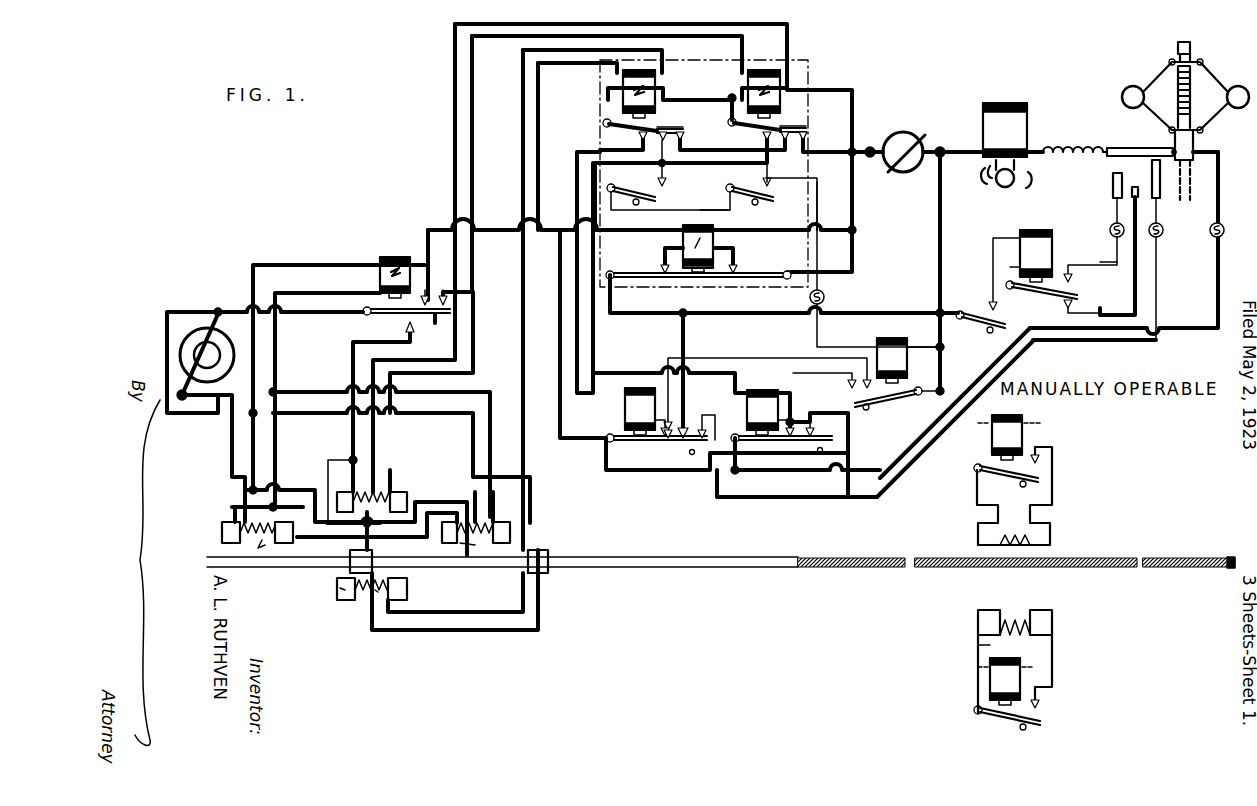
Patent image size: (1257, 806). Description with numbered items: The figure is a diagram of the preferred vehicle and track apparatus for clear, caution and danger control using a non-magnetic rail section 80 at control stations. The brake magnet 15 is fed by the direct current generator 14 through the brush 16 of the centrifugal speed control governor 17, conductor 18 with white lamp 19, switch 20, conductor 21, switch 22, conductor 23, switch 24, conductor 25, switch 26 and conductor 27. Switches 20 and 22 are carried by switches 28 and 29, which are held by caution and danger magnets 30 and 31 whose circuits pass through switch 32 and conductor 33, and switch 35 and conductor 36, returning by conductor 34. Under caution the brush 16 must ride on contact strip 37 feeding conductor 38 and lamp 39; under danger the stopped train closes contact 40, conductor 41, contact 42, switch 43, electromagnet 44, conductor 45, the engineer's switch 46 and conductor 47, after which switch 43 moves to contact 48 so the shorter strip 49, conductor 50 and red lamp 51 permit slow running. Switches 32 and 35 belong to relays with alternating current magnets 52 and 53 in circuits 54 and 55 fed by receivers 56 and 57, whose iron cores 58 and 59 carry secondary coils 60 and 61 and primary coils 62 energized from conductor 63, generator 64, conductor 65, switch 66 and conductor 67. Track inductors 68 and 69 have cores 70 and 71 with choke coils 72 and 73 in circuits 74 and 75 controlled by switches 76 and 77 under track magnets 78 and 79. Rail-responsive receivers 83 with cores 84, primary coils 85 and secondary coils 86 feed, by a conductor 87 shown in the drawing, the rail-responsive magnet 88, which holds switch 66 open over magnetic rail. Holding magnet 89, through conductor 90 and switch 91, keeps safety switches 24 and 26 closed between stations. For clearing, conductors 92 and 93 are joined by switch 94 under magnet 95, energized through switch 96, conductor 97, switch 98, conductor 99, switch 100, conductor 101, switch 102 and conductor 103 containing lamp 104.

The direct current generator 14 is at (903, 148).
The magnet 15 is at (1003, 118).
The contact brush 16 is at (1108, 148).
The centrifugal speed control governor 17 is at (1150, 70).
The conductor 18 is at (1180, 330).
The white electric lamp 19 is at (1212, 238).
The switch 20 is at (822, 440).
The conductor 21 is at (755, 455).
The switch 22 is at (690, 440).
The conductor 23 is at (682, 345).
The switch 24 is at (641, 275).
The conductor 25 is at (735, 253).
The switch 26 is at (738, 275).
The conductor 27 is at (818, 92).
The switch 28 is at (783, 440).
The switch 29 is at (650, 440).
The electro-magnet 30 is at (760, 400).
The electro-magnet 31 is at (642, 400).
The switch 32 is at (745, 130).
The conductor 33 is at (592, 211).
The conductor 34 is at (514, 298).
The switch 35 is at (620, 128).
The conductor 36 is at (551, 167).
The caution contact strip 37 is at (1156, 162).
The conductor 38 is at (1020, 355).
The green or yellow electric lamp 39 is at (1163, 230).
The contact 40 is at (1134, 187).
The conductor 41 is at (1098, 318).
The contact 42 is at (1078, 300).
The switch 43 is at (1050, 293).
The electromagnet 44 is at (1036, 248).
The conductor 45 is at (990, 270).
The engineer's switch 46 is at (962, 312).
The conductor 47 is at (735, 313).
The contact 48 is at (1073, 276).
The danger speed control contact strip 49 is at (1112, 183).
The conductor 50 is at (1100, 262).
The red danger electric lamp 51 is at (1110, 228).
The alternating current electro-magnet 52 is at (762, 70).
The alternating current electro-magnet 53 is at (656, 79).
The circuit 54 is at (453, 155).
The circuit 55 is at (545, 570).
The receiver 56 is at (400, 492).
The receiver 57 is at (410, 590).
The iron core 58 is at (407, 498).
The iron core 59 is at (340, 590).
The secondary coil 60 is at (390, 490).
The secondary coil 61 is at (378, 592).
The primary coil 62 is at (350, 490).
The conductor 63 is at (310, 455).
The alternating or pulsating current generator 64 is at (200, 358).
The conductor 65 is at (297, 260).
The switch 66 is at (367, 314).
The conductor 67 is at (350, 366).
The inductor 68 is at (1070, 521).
The inductor 69 is at (1070, 628).
The core 70 is at (978, 535).
The core 71 is at (978, 625).
The choke coil 72 is at (1052, 538).
The choke coil 73 is at (1012, 618).
The circuit 74 is at (1055, 478).
The circuit 75 is at (975, 680).
The control switch 76 is at (998, 472).
The control switch 77 is at (975, 712).
The track electro-magnet 78 is at (1030, 428).
The track electro-magnet 79 is at (1010, 686).
The non-magnetic rail section 80 is at (866, 556).
The rail-responsive receiver 83 is at (515, 525).
The core 84 is at (515, 533).
The primary coil 85 is at (475, 545).
The secondary coil 86 is at (475, 520).
The conductor 87 is at (255, 265).
The rail-responsive magnet 88 is at (388, 268).
The holding electro-magnet 89 is at (695, 258).
The conductor 90 is at (504, 229).
The switch 91 is at (434, 318).
The conductor 92 is at (822, 375).
The conductor 93 is at (750, 358).
The switch 94 is at (882, 405).
The clearing electro-magnet 95 is at (890, 338).
The switch 96 is at (800, 130).
The conductor 97 is at (780, 152).
The switch 98 is at (672, 130).
The conductor 99 is at (666, 172).
The switch 100 is at (656, 195).
The conductor 101 is at (712, 210).
The switch 102 is at (770, 200).
The conductor 103 is at (818, 212).
The electric lamp 104 is at (823, 297).